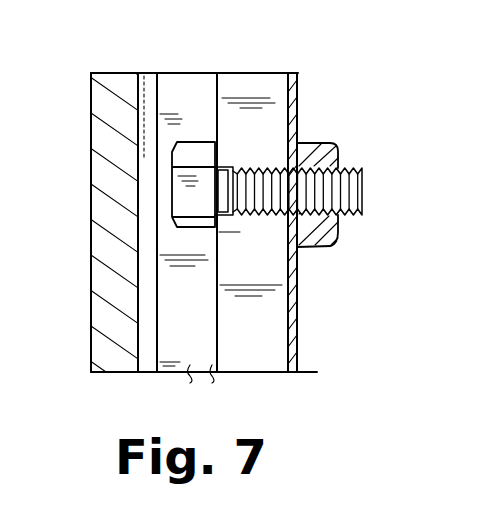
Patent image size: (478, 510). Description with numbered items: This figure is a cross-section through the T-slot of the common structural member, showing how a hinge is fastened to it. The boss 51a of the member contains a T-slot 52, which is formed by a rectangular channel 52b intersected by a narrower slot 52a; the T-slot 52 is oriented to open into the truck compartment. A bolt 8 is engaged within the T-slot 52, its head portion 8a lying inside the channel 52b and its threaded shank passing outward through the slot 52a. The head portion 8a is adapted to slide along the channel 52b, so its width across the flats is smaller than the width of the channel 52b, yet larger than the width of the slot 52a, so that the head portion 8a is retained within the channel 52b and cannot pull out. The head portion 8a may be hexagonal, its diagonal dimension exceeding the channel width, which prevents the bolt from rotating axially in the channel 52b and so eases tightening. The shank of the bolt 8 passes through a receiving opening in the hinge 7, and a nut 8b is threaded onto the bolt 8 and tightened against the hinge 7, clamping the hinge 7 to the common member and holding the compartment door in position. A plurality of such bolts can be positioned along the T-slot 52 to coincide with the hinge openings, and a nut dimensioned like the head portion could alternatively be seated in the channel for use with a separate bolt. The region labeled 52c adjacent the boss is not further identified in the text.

The hinge 7 is at (297, 303).
The bolt 8 is at (298, 138).
The head portion 8a is at (198, 147).
The nut 8b is at (330, 245).
The boss 51a is at (95, 205).
The T-slot 52 is at (246, 228).
The slot 52a is at (272, 353).
The rectangular channel 52b is at (207, 353).
The gap between wall and plate 52c is at (143, 358).